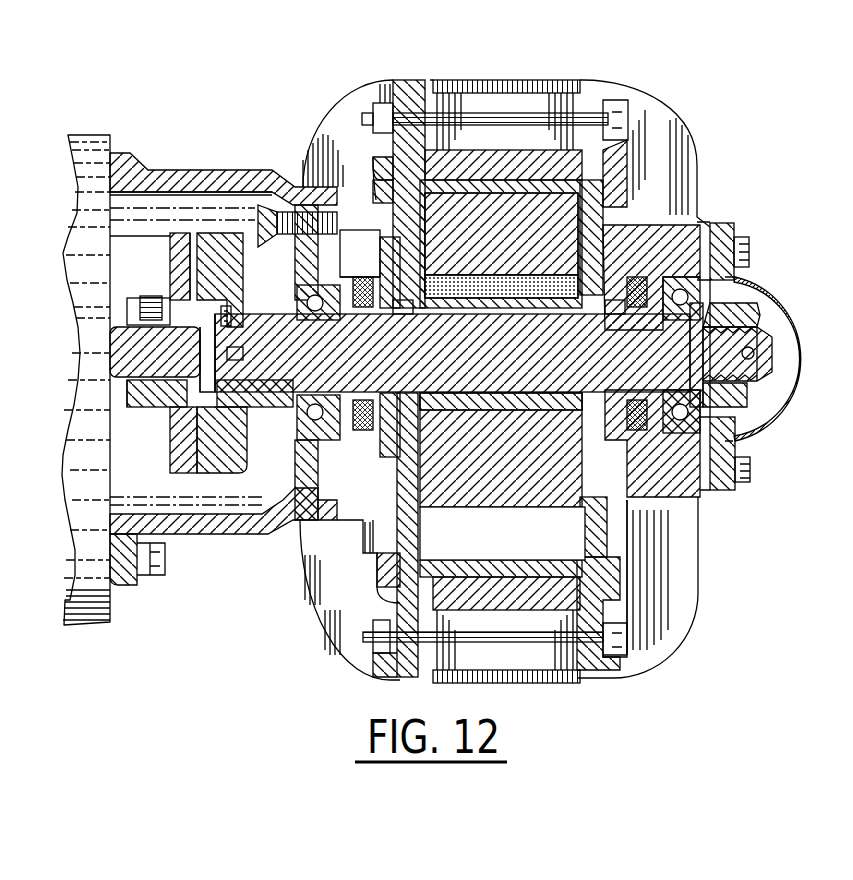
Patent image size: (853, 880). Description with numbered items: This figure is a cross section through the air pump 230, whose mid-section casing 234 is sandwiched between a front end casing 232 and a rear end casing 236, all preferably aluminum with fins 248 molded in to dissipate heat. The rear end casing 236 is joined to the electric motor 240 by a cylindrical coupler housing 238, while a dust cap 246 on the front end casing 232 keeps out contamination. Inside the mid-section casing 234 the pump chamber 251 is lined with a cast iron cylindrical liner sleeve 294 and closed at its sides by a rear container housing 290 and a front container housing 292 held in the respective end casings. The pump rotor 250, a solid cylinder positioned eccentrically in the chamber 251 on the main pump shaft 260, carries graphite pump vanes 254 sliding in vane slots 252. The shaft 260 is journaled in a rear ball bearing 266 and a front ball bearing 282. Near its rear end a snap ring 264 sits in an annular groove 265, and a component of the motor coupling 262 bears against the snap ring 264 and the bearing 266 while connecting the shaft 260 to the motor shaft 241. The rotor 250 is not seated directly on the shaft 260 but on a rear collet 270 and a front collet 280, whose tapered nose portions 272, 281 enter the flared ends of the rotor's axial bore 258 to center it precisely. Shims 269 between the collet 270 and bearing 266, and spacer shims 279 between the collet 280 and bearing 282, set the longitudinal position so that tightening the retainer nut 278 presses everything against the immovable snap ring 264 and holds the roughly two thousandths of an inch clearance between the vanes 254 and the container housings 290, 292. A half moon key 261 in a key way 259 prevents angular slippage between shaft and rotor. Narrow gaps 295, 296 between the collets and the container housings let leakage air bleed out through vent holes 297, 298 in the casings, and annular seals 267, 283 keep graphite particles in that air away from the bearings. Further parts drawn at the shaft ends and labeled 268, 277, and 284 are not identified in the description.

The pump 230 is at (668, 98).
The front end casing 232 is at (703, 500).
The mid-section casing 234 is at (620, 595).
The rear end casing 236 is at (373, 580).
The cylindrical coupler housing 238 is at (215, 537).
The electric motor 240 is at (85, 618).
The motor shaft 241 is at (127, 382).
The dust cap 246 is at (740, 279).
The fins 248 is at (700, 572).
The pump rotor 250 is at (600, 203).
The pump chamber 251 is at (522, 546).
The vane slots 252 is at (447, 445).
The pump vanes 254 is at (555, 275).
The axial bore 258 is at (493, 355).
The key way 259 is at (612, 313).
The main pump shaft 260 is at (262, 230).
The half moon key 261 is at (485, 318).
The motor coupling 262 is at (203, 473).
The snap ring 264 is at (193, 428).
The annular groove 265 is at (240, 377).
The ball bearing 266 is at (303, 426).
The annular seal 267 is at (307, 522).
The screw 268 is at (293, 482).
The shims 269 is at (343, 380).
The rear collet 270 is at (400, 470).
The tapered nose portion 272 is at (433, 437).
The retaining ring 277 is at (793, 322).
The retainer nut 278 is at (767, 307).
The spacer shims 279 is at (652, 393).
The front collet 280 is at (613, 473).
The tapered nose portion 281 is at (570, 449).
The ball bearing 282 is at (733, 438).
The annular seal 283 is at (750, 470).
The screw 284 is at (737, 447).
The rear container housing 290 is at (376, 200).
The front container housing 292 is at (600, 228).
The cylindrical liner sleeve 294 is at (600, 157).
The narrow gap 295 is at (410, 317).
The narrow gap 296 is at (610, 345).
The vent hole 297 is at (340, 187).
The vent hole 298 is at (615, 272).